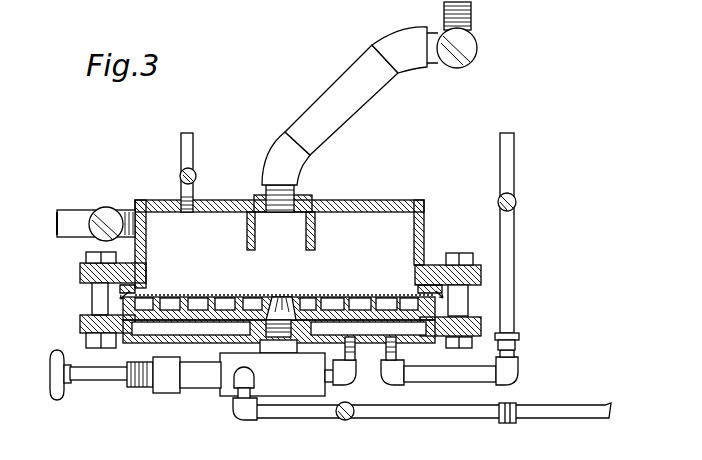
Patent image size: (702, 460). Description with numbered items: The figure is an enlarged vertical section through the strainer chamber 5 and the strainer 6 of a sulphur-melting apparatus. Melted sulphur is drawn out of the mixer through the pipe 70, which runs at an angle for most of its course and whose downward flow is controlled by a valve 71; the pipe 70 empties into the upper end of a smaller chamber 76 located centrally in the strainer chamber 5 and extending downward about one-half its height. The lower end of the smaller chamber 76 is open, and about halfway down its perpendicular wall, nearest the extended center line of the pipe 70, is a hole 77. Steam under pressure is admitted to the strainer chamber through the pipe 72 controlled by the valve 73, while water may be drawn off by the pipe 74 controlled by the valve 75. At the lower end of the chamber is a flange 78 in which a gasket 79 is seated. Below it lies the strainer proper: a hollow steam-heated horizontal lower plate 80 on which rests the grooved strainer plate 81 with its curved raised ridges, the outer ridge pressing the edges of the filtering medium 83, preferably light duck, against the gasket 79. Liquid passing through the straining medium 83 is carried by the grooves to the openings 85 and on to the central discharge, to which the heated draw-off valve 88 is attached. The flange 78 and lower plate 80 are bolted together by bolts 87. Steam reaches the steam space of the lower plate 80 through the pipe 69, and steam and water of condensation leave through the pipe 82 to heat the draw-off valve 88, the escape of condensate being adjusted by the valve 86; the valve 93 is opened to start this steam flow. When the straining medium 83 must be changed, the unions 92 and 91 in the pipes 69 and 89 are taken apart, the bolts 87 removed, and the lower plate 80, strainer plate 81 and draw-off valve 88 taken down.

The strainer chamber 5 is at (285, 296).
The strainer 6 is at (290, 298).
The pipe 69 is at (514, 160).
The pipe 70 is at (333, 102).
The valve 71 is at (467, 42).
The pipe 72 is at (193, 142).
The valve 73 is at (196, 176).
The pipe 74 is at (71, 213).
The valve 75 is at (106, 209).
The smaller chamber 76 is at (283, 211).
The hole 77 is at (246, 236).
The flange 78 is at (80, 275).
The gasket 79 is at (134, 292).
The lower plate 80 is at (80, 323).
The strainer plate 81 is at (445, 301).
The pipe 82 is at (357, 352).
The filtering medium 83 is at (331, 296).
The openings 85 is at (268, 302).
The valve 86 is at (352, 418).
The bolts 87 is at (97, 298).
The draw-off valve 88 is at (192, 380).
The pipe 89 is at (292, 418).
The union 91 is at (517, 422).
The union 92 is at (519, 338).
The valve 93 is at (517, 203).